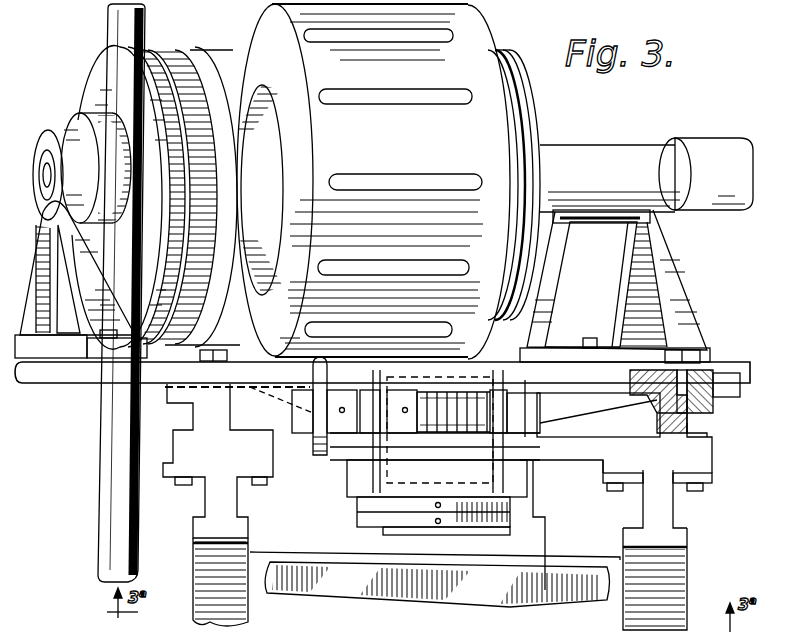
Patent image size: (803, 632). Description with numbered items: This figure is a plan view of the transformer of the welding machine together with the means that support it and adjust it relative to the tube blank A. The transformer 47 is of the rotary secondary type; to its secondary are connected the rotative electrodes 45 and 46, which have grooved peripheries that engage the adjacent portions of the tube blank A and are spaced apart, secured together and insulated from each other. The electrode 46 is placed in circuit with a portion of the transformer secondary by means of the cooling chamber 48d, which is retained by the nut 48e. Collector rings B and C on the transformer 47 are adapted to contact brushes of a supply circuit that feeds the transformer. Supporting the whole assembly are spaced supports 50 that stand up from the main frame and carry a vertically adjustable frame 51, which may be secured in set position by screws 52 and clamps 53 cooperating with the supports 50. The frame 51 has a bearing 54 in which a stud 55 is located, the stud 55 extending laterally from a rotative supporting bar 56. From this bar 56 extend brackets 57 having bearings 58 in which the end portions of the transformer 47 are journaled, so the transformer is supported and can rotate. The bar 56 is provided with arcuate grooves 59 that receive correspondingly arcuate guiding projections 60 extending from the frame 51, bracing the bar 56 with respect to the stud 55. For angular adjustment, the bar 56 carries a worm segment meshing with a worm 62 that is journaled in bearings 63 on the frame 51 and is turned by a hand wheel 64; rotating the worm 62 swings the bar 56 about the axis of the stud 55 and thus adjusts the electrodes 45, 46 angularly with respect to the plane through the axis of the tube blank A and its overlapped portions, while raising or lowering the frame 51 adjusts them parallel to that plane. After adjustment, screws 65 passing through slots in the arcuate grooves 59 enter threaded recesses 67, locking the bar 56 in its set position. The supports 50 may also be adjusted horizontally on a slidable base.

The rotative electrode 45 is at (200, 51).
The rotative electrode 46 is at (155, 51).
The transformer 47 is at (373, 181).
The cooling chamber 48d is at (121, 198).
The nut 48e is at (77, 115).
The supports 50 is at (200, 518).
The vertically adjustable frame 51 is at (575, 455).
The screws 52 is at (703, 487).
The clamps 53 is at (617, 473).
The bearing 54 is at (435, 501).
The stud 55 is at (510, 527).
The rotative supporting bar 56 is at (598, 382).
The brackets 57 is at (630, 262).
The bearings 58 is at (40, 140).
The arcuate grooves 59 is at (318, 380).
The arcuate guiding projections 60 is at (737, 420).
The worm 62 is at (427, 413).
The bearings 63 is at (528, 410).
The hand wheel 64 is at (321, 458).
The screws 65 is at (203, 350).
The threaded recesses 67 is at (693, 433).
The tube blank A is at (107, 38).
The collector ring B is at (493, 82).
The collector ring C is at (518, 64).